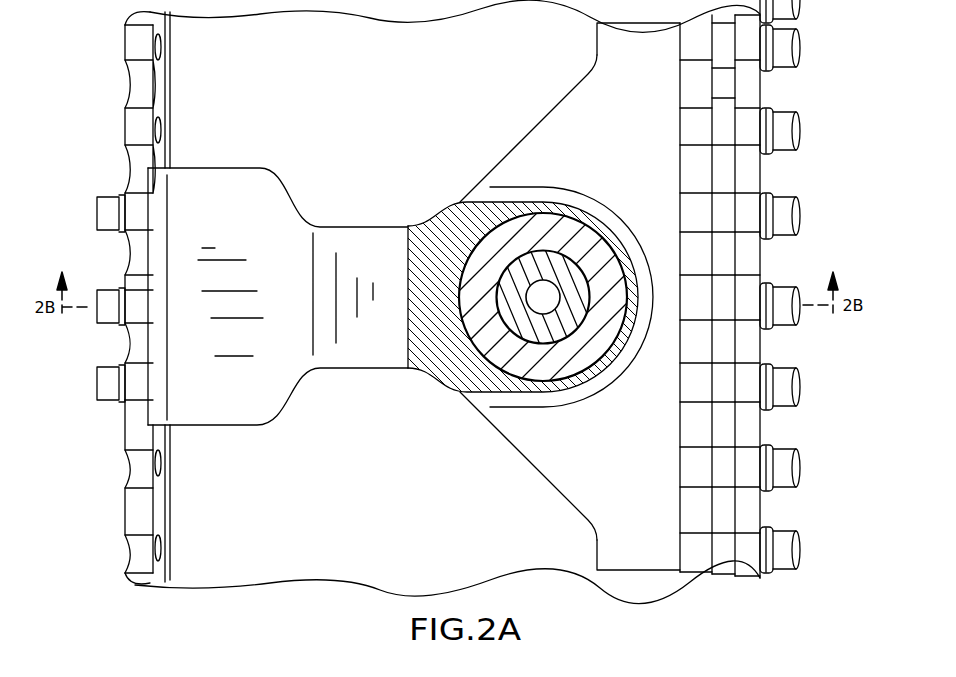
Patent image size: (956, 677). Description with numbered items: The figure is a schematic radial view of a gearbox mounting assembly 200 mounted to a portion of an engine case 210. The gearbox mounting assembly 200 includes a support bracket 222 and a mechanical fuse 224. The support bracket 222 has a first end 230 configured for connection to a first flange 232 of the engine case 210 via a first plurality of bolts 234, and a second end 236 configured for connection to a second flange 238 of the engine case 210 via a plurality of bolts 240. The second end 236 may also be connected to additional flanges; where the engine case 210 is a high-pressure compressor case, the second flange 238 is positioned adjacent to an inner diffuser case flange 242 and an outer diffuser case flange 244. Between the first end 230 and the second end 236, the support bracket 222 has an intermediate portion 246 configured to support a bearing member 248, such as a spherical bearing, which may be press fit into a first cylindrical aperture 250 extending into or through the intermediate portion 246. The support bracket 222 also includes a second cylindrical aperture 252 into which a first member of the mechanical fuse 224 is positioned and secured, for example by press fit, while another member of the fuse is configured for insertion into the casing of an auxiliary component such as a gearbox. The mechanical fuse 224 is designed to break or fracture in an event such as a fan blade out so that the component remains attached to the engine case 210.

The gearbox mounting assembly 200 is at (337, 148).
The engine case 210 is at (424, 71).
The support bracket 222 is at (247, 428).
The mechanical fuse 224 is at (557, 258).
The first end 230 is at (150, 205).
The first flange 232 is at (128, 462).
The first plurality of bolts 234 is at (105, 313).
The second end 236 is at (600, 486).
The second flange 238 is at (697, 550).
The plurality of bolts 240 is at (780, 313).
The inner diffuser case flange 242 is at (725, 560).
The outer diffuser case flange 244 is at (750, 560).
The intermediate portion 246 is at (443, 364).
The bearing member 248 is at (493, 242).
The first cylindrical aperture 250 is at (485, 353).
The second cylindrical aperture 252 is at (564, 378).